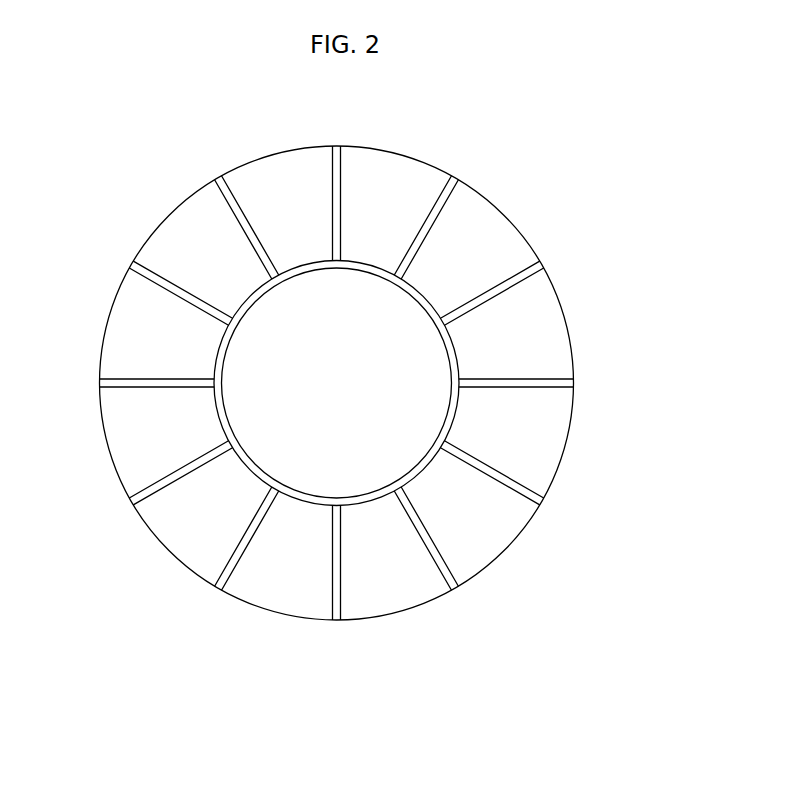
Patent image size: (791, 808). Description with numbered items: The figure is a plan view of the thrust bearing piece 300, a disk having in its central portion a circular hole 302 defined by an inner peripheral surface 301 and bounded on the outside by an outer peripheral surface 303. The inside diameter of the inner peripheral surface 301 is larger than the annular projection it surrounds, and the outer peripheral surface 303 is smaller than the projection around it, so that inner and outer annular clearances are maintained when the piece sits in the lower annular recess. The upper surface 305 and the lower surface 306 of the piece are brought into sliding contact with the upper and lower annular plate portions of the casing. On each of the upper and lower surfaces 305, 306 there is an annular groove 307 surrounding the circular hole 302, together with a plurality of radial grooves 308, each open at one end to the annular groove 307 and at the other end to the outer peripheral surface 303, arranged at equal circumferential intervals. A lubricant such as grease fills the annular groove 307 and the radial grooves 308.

The thrust bearing piece 300 is at (137, 215).
The inner peripheral surface 301 is at (358, 287).
The circular hole 302 is at (262, 398).
The outer peripheral surface 303 is at (565, 318).
The upper surface 305 is at (500, 227).
The lower surface 306 is at (492, 293).
The annular groove 307 is at (303, 498).
The radial grooves 308 is at (435, 548).